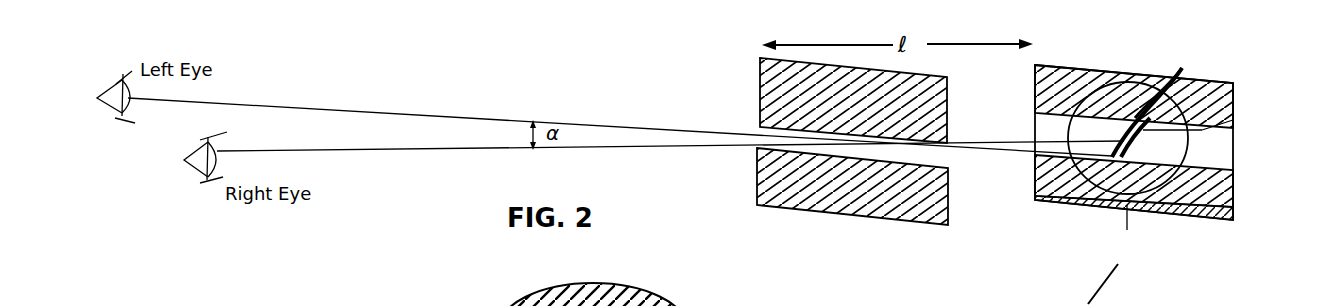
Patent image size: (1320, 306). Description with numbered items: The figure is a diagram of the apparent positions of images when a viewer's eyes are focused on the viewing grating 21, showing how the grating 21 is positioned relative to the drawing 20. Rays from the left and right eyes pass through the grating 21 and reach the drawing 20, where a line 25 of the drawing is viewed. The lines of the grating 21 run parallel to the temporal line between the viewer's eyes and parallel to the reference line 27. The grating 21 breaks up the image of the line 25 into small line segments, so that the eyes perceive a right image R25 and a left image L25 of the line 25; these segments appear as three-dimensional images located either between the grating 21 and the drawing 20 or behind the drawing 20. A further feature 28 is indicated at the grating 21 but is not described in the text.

The drawing 20 is at (1110, 75).
The grating 21 is at (758, 85).
The line 25 is at (1185, 97).
The right image R25 is at (1182, 68).
The left image L25 is at (1233, 120).
The reference line 27 is at (1203, 207).
The grating slit 28 is at (826, 112).